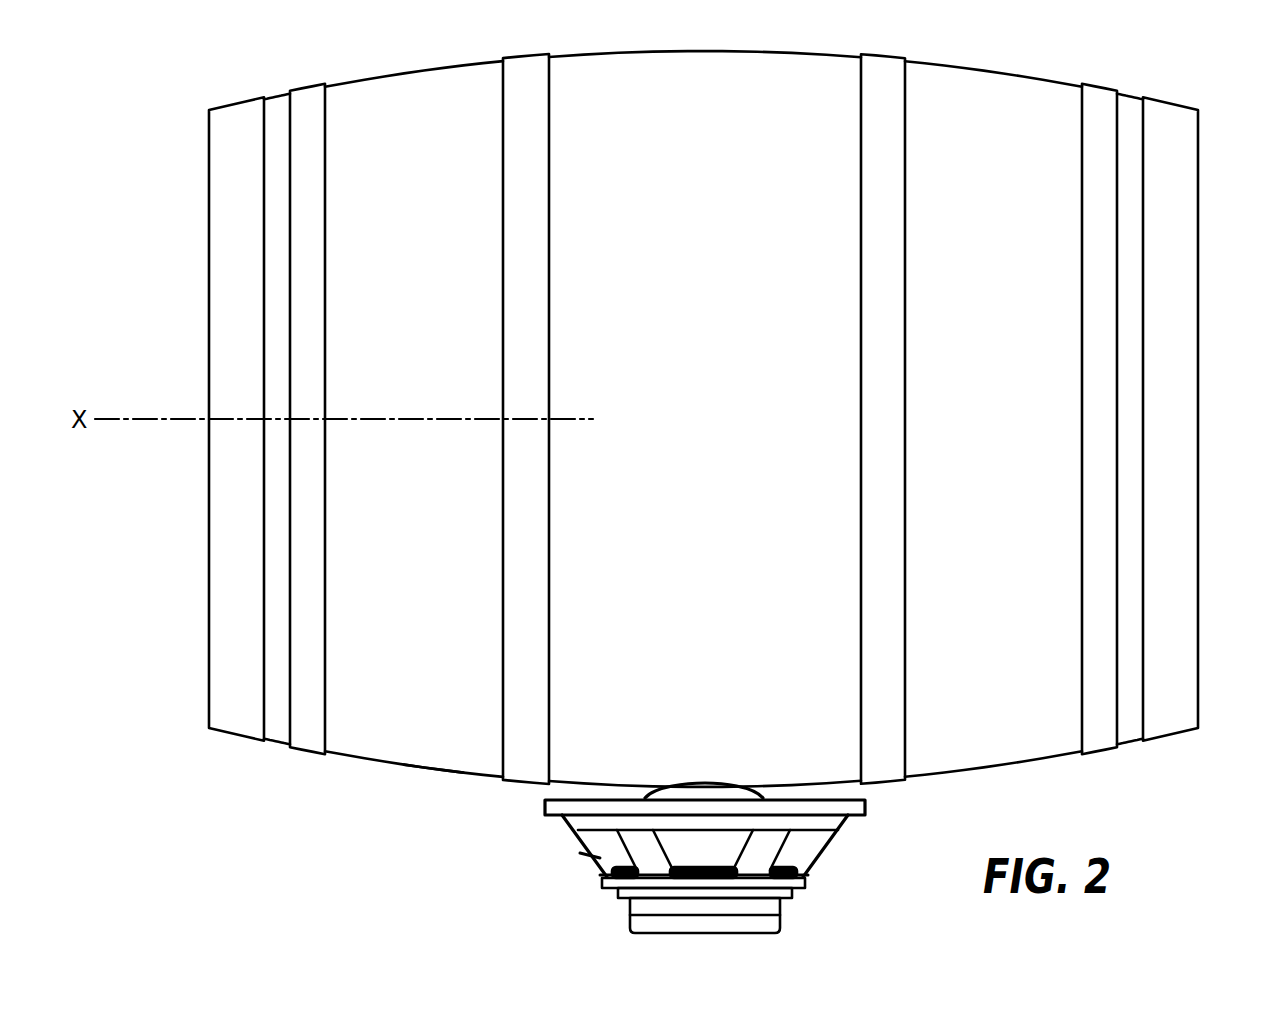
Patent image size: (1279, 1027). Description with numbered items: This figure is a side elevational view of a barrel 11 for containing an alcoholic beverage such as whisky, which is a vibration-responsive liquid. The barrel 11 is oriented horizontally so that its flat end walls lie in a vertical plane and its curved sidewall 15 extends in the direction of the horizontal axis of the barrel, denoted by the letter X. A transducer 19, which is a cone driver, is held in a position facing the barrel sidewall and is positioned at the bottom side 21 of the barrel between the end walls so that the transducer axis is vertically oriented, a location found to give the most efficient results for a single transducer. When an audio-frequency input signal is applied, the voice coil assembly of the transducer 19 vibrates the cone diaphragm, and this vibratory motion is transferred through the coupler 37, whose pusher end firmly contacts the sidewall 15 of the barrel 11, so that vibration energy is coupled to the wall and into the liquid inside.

The barrel 11 is at (593, 53).
The bottom side 21 is at (444, 772).
The curved sidewall 15 is at (688, 649).
The coupler 37 is at (752, 787).
The transducer 19 is at (838, 852).